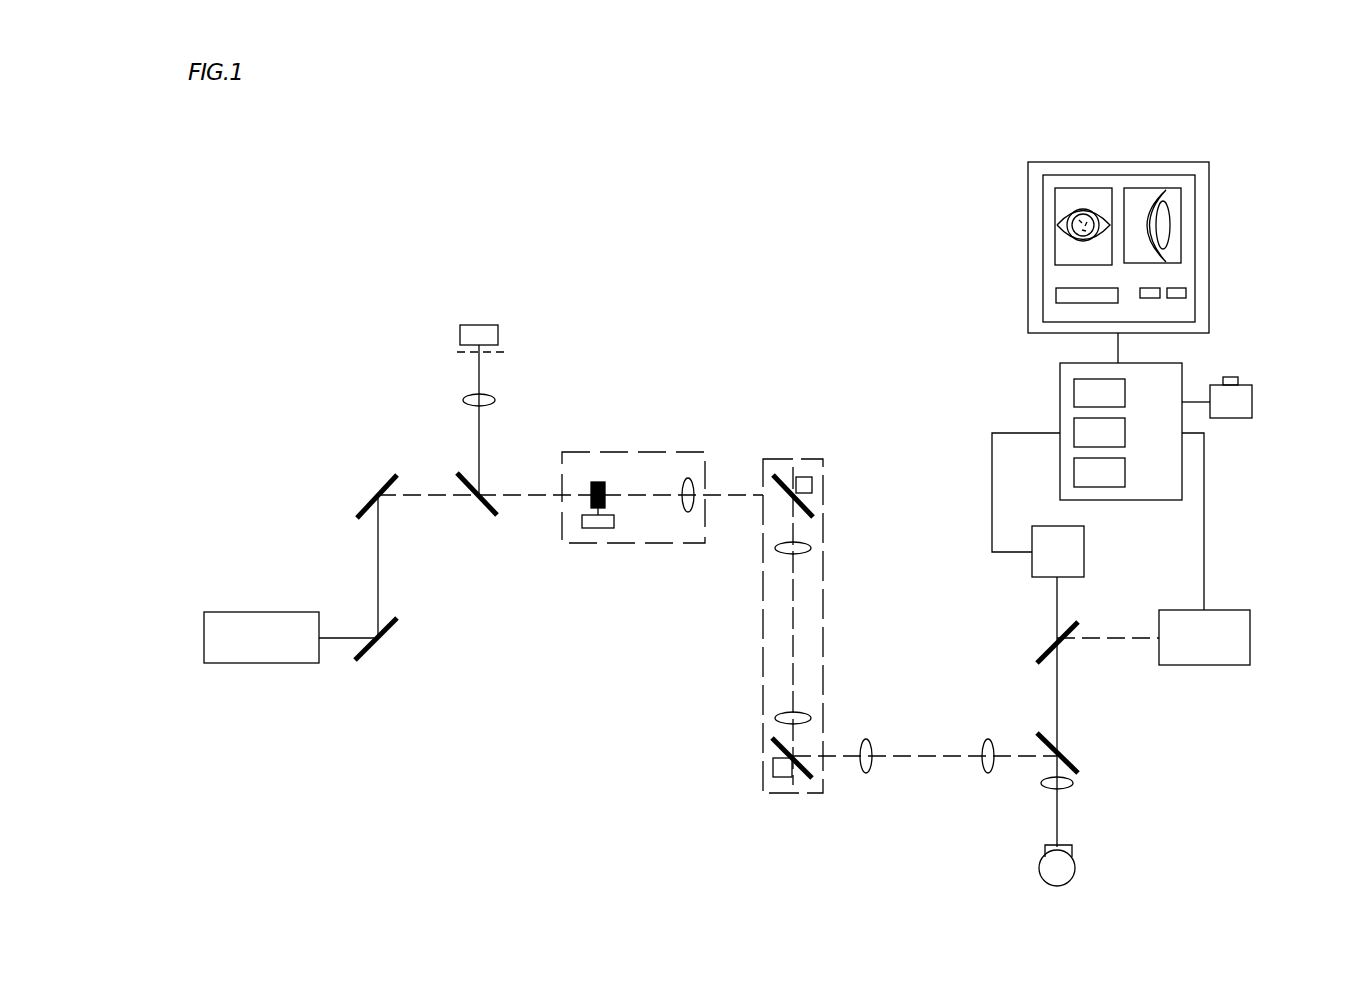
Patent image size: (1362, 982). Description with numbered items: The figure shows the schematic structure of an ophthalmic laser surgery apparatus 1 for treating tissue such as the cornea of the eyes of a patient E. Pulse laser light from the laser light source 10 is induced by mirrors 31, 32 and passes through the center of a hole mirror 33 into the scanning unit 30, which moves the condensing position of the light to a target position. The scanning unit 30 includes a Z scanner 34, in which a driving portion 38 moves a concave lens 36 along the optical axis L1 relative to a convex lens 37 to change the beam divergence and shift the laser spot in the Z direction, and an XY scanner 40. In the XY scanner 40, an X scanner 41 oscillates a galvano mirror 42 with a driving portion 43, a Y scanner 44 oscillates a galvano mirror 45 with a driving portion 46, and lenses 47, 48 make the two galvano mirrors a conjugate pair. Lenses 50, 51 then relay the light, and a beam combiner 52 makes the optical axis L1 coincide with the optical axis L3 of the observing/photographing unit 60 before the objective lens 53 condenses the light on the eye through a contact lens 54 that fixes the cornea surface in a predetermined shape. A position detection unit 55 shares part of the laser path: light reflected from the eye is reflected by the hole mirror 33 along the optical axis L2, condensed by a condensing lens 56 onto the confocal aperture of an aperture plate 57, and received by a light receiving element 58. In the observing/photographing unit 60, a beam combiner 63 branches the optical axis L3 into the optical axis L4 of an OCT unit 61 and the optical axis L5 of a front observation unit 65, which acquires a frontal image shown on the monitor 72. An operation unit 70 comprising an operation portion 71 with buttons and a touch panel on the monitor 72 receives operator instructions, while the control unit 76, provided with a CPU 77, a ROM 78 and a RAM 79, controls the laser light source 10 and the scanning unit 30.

The ophthalmic laser surgery apparatus 1 is at (318, 256).
The laser light source 10 is at (235, 612).
The scanning unit 30 is at (647, 675).
The mirror 31 is at (365, 655).
The mirror 32 is at (360, 510).
The hole mirror 33 is at (490, 514).
The Z scanner 34 is at (627, 553).
The concave lens 36 is at (598, 482).
The convex lens 37 is at (688, 512).
The driving portion 38 is at (585, 528).
The XY scanner 40 is at (752, 657).
The X scanner 41 is at (832, 416).
The galvano mirror 42 is at (772, 474).
The driving portion 43 is at (798, 472).
The Y scanner 44 is at (832, 840).
The galvano mirror 45 is at (805, 778).
The driving portion 46 is at (775, 777).
The lens 47 is at (812, 548).
The lens 48 is at (809, 718).
The lens 50 is at (866, 773).
The lens 51 is at (988, 773).
The beam combiner 52 is at (1070, 762).
The objective lens 53 is at (1073, 785).
The contact lens 54 is at (1073, 848).
The position detection unit 55 is at (533, 345).
The condensing lens 56 is at (462, 400).
The aperture plate 57 is at (457, 352).
The light receiving element 58 is at (460, 333).
The observing/photographing unit 60 is at (1249, 569).
The OCT unit 61 is at (1197, 652).
The beam combiner 63 is at (1048, 640).
The front observation unit 65 is at (1086, 545).
The operation unit 70 is at (1230, 317).
The operation portion 71 is at (1252, 400).
The monitor 72 is at (1052, 162).
The control unit 76 is at (1060, 390).
The CPU 77 is at (1126, 393).
The ROM 78 is at (1126, 433).
The RAM 79 is at (1126, 472).
The eyes of a patient E is at (1075, 873).
The optical axis L1 is at (335, 641).
The optical axis L2 is at (479, 432).
The optical axis L3 is at (1058, 688).
The optical axis L4 is at (1118, 638).
The optical axis L5 is at (1057, 590).